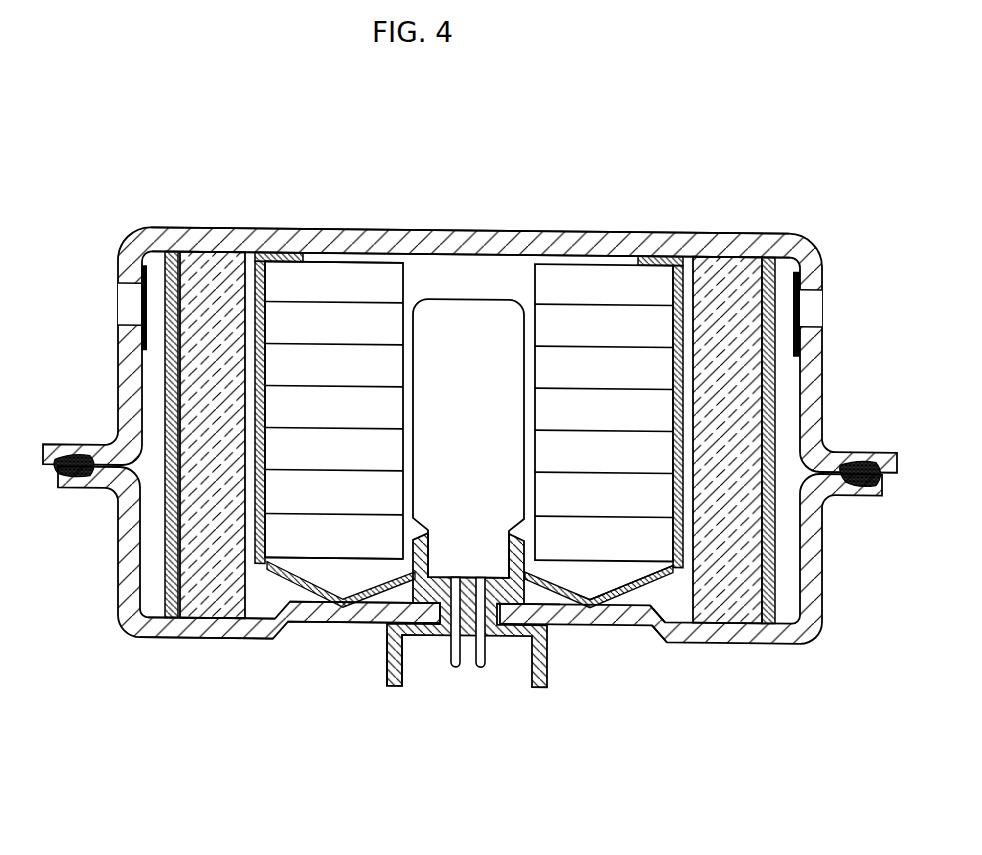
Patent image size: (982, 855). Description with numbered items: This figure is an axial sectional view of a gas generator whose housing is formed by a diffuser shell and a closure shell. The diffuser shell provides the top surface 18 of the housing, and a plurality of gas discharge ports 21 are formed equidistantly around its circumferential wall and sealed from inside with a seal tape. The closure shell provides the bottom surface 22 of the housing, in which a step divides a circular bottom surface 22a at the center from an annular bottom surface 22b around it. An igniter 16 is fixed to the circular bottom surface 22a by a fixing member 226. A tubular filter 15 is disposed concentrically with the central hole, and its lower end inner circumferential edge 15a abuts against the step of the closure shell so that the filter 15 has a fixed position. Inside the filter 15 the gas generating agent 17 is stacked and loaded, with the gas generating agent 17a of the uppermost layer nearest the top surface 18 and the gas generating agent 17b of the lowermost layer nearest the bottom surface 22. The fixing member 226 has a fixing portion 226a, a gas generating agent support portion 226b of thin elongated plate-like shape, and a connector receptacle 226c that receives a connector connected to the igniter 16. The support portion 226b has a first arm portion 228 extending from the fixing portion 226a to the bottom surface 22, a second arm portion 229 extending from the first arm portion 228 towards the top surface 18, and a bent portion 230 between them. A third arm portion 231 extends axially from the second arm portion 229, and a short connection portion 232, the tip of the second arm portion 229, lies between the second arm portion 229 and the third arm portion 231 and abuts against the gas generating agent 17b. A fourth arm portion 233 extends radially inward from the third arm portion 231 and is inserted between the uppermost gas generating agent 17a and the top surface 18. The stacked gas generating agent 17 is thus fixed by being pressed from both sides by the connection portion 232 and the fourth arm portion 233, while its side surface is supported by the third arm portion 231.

The filter 15 is at (207, 263).
The lower end inner circumferential edge of the filter 15a is at (732, 253).
The igniter 16 is at (491, 387).
The gas generating agent 17 is at (346, 383).
The gas generating agent of the uppermost layer 17a is at (347, 275).
The gas generating agent of the lowermost layer 17b is at (287, 540).
The top surface of the housing 18 is at (467, 245).
The gas discharge ports 21 is at (128, 303).
The bottom surface of the housing 22 is at (333, 740).
The circular bottom surface 22a is at (345, 625).
The annular bottom surface 22b is at (227, 640).
The fixing member 226 is at (437, 642).
The fixing portion 226a is at (528, 560).
The gas generating agent support portion 226b is at (325, 590).
The connector receptacle 226c is at (387, 680).
The first arm portion 228 is at (547, 590).
The second arm portion 229 is at (635, 583).
The bent portion 230 is at (592, 600).
The third arm portion 231 is at (683, 410).
The connection portion 232 is at (695, 608).
The fourth arm portion 233 is at (653, 256).